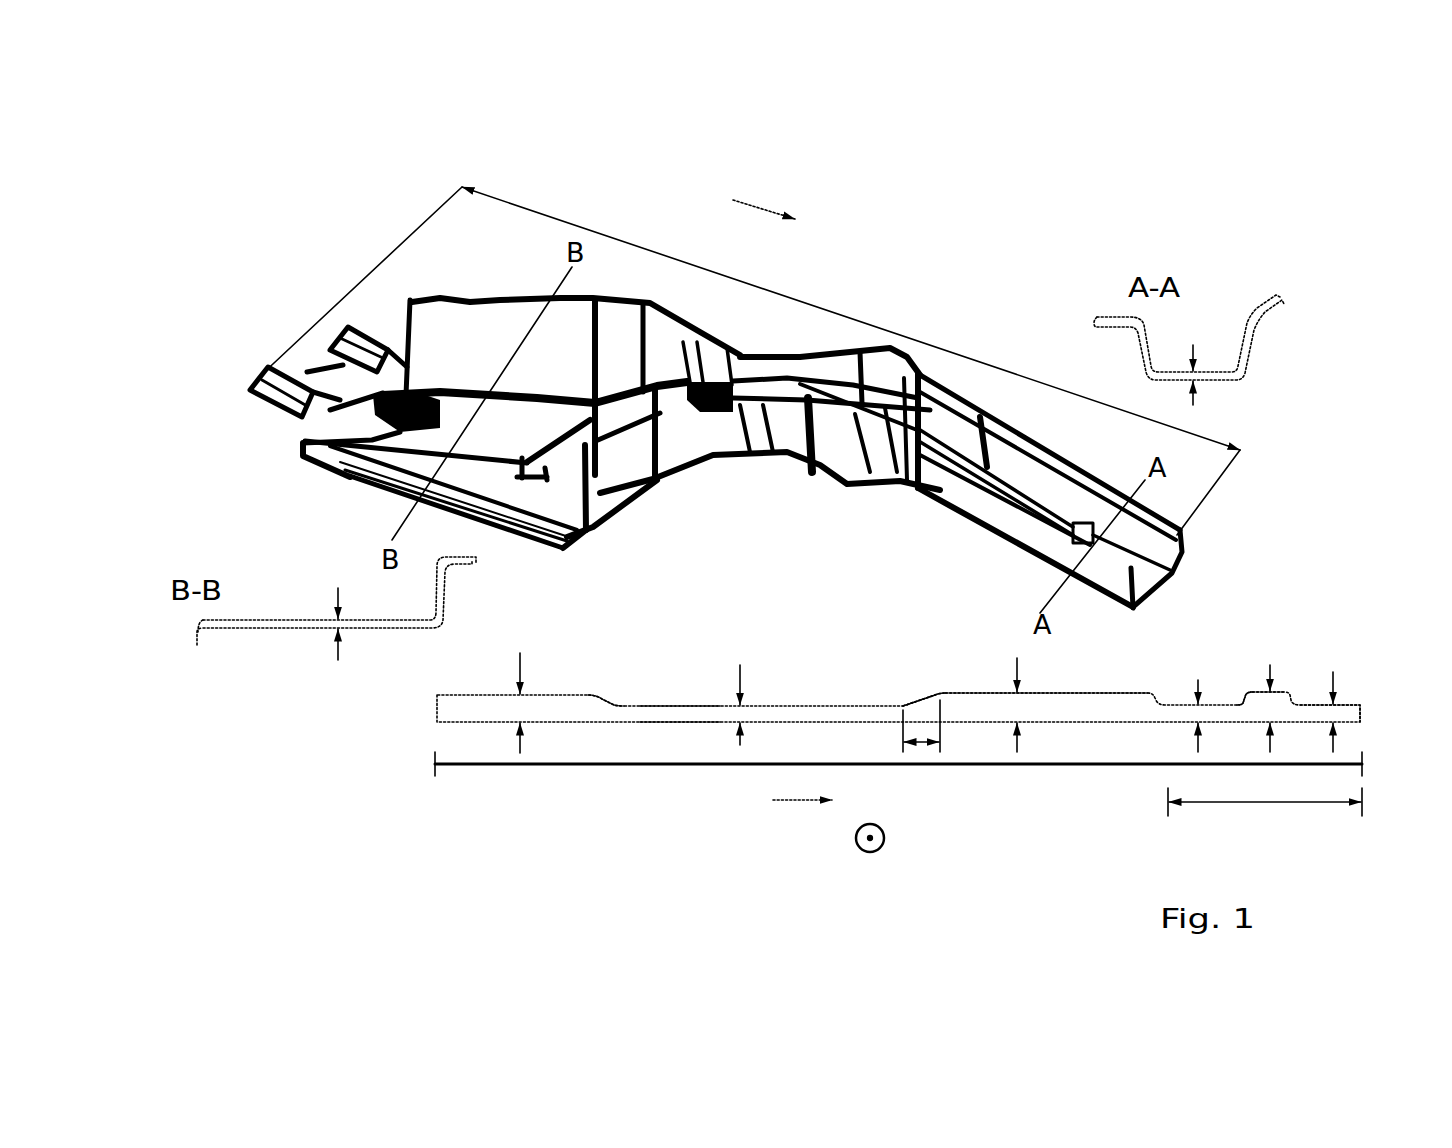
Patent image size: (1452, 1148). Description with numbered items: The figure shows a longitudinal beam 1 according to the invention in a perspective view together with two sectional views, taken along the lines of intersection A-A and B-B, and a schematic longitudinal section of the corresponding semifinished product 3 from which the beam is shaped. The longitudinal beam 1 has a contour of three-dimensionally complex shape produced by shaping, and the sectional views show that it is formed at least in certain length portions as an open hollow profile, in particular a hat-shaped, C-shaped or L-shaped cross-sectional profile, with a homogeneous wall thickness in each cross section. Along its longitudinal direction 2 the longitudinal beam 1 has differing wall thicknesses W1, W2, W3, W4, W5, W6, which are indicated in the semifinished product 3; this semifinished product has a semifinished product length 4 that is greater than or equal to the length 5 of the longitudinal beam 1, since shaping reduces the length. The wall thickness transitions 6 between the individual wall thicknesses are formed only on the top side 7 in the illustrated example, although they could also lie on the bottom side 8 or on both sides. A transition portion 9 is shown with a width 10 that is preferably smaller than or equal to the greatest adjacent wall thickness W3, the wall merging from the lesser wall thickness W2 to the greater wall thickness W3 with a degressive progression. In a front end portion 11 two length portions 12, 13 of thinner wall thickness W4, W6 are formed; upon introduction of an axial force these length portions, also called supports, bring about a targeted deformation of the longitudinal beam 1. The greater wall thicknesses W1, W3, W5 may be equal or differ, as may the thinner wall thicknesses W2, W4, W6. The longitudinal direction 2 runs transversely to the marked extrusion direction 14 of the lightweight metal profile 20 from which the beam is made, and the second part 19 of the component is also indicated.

The longitudinal beam 1 is at (503, 131).
The longitudinal direction 2 is at (782, 486).
The semifinished product 3 is at (428, 721).
The semifinished product length 4 is at (898, 755).
The length of the longitudinal beam 5 is at (749, 361).
The wall thickness transitions 6 is at (614, 696).
The top side 7 is at (674, 702).
The bottom side 8 is at (668, 727).
The transition portion 9 is at (929, 716).
The width of transition portion 10 is at (922, 748).
The front end portion 11 is at (1265, 794).
The length portion 12 is at (1220, 717).
The length portion 13 is at (862, 683).
The extrusion direction 14 is at (885, 844).
The second part 19 is at (222, 325).
The lightweight metal profile 20 is at (1383, 698).
The wall thickness W1 is at (539, 692).
The wall thickness W2 is at (558, 666).
The wall thickness W3 is at (1037, 698).
The wall thickness W4 is at (1218, 705).
The wall thickness W5 is at (1287, 698).
The wall thickness W6 is at (1282, 536).